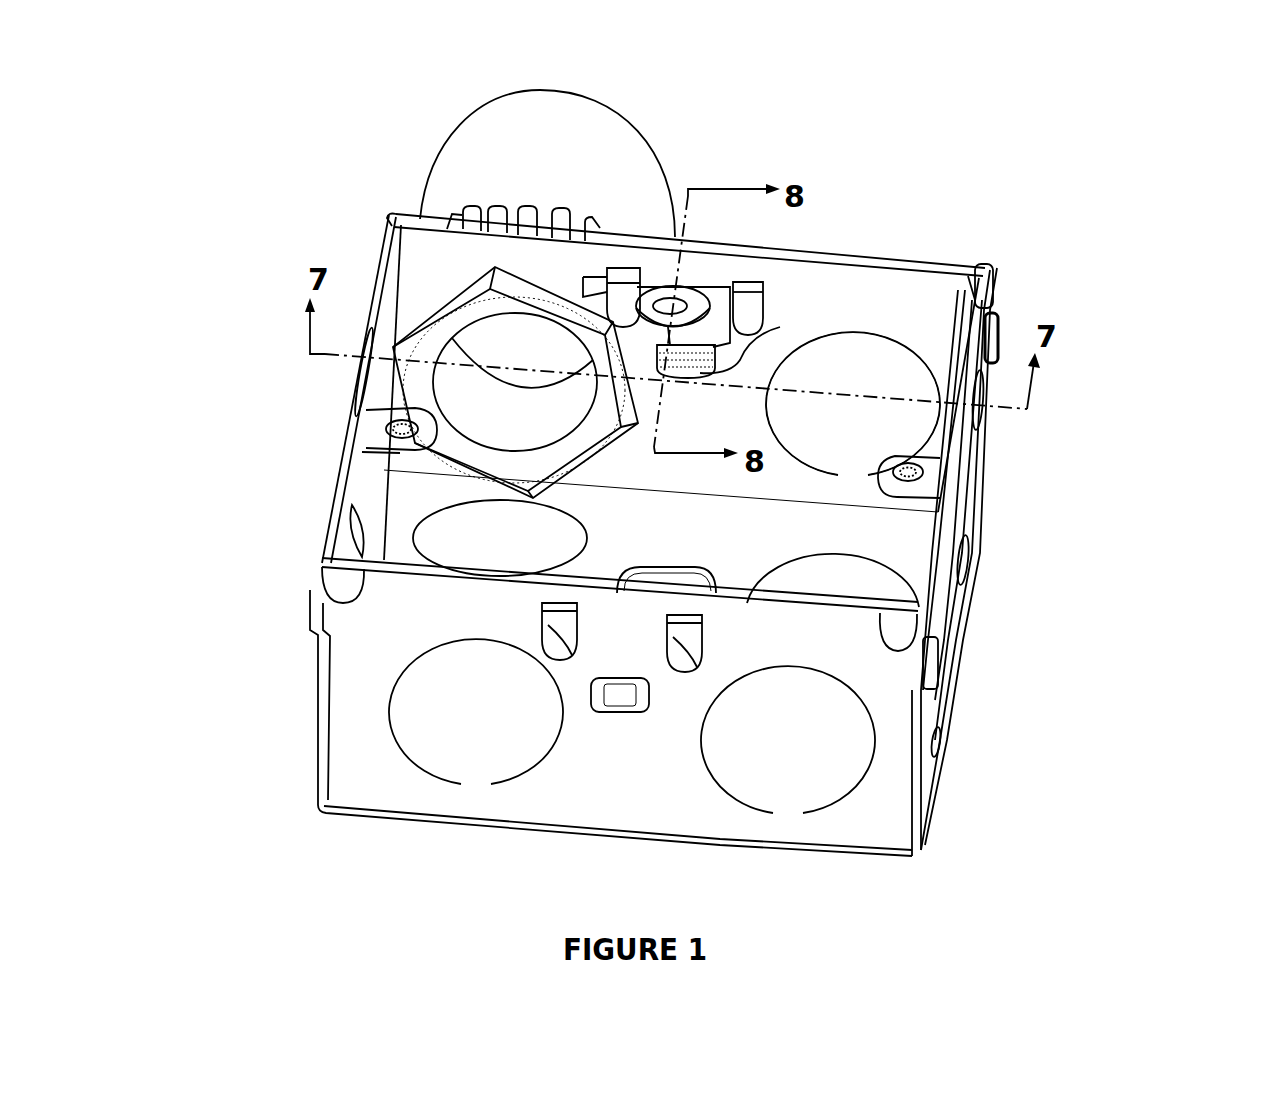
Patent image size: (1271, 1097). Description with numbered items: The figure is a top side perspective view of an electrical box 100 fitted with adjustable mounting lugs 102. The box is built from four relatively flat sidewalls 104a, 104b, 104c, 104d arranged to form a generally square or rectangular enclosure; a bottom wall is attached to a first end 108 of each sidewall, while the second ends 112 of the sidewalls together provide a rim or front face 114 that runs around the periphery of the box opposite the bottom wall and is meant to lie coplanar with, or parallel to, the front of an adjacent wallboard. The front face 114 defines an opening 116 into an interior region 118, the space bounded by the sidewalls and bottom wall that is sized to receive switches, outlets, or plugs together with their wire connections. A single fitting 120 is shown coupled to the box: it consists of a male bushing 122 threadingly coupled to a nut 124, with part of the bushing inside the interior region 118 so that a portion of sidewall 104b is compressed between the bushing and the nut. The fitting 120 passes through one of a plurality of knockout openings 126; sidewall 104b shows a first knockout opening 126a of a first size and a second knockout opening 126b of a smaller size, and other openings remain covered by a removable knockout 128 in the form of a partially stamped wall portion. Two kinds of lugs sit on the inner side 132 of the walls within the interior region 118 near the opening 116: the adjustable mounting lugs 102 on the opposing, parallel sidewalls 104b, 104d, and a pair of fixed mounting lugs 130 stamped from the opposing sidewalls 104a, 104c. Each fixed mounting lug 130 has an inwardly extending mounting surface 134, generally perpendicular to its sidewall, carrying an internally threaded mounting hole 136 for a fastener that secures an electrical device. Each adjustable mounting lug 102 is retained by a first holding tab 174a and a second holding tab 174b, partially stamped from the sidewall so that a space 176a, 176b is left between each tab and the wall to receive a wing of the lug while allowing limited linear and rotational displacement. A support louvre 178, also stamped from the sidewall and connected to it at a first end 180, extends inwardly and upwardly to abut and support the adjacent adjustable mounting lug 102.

The electrical box 100 is at (954, 151).
The adjustable mounting lug 102 is at (718, 300).
The sidewall 104a is at (957, 615).
The sidewall 104b is at (887, 294).
The sidewall 104c is at (340, 456).
The sidewall 104d is at (604, 805).
The first end 108 is at (927, 795).
The second end 112 is at (846, 272).
The front face 114 is at (933, 265).
The opening 116 is at (975, 292).
The interior region 118 is at (813, 545).
The fitting 120 is at (385, 112).
The male bushing 122 is at (440, 300).
The nut 124 is at (643, 157).
The knockout opening 126 is at (522, 556).
The first knockout opening 126a is at (547, 364).
The second knockout opening 126b is at (925, 478).
The knockout 128 is at (664, 572).
The fixed mounting lug 130 is at (376, 422).
The inner side 132 is at (965, 294).
The mounting surface 134 is at (385, 402).
The mounting hole 136 is at (400, 440).
The first holding tab 174a is at (623, 300).
The second holding tab 174b is at (752, 305).
The space 176a is at (553, 643).
The space 176b is at (688, 668).
The support louvre 178 is at (705, 330).
The first end 180 is at (672, 388).